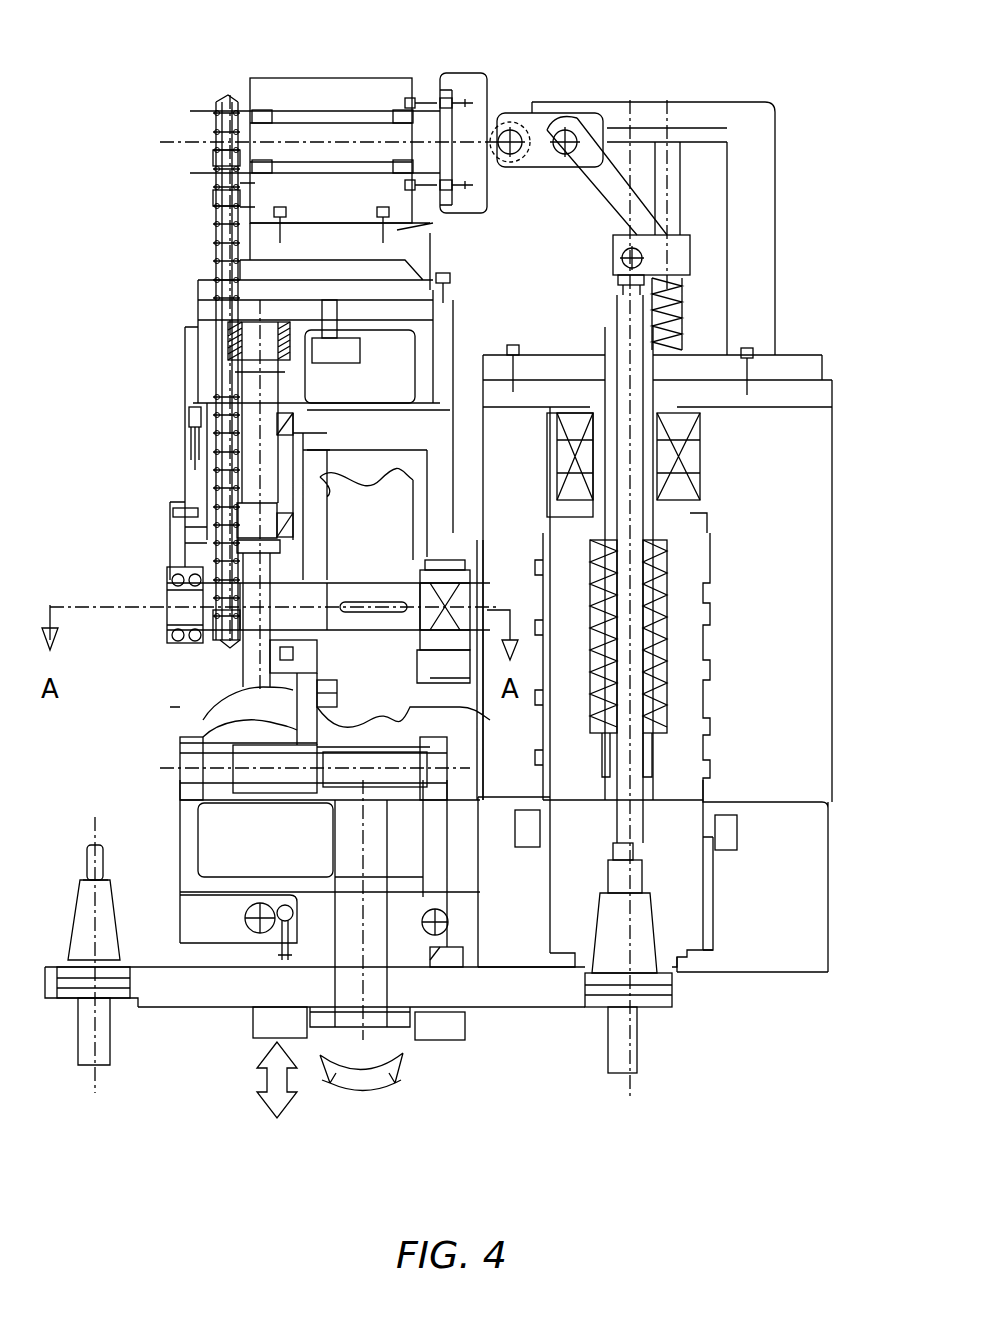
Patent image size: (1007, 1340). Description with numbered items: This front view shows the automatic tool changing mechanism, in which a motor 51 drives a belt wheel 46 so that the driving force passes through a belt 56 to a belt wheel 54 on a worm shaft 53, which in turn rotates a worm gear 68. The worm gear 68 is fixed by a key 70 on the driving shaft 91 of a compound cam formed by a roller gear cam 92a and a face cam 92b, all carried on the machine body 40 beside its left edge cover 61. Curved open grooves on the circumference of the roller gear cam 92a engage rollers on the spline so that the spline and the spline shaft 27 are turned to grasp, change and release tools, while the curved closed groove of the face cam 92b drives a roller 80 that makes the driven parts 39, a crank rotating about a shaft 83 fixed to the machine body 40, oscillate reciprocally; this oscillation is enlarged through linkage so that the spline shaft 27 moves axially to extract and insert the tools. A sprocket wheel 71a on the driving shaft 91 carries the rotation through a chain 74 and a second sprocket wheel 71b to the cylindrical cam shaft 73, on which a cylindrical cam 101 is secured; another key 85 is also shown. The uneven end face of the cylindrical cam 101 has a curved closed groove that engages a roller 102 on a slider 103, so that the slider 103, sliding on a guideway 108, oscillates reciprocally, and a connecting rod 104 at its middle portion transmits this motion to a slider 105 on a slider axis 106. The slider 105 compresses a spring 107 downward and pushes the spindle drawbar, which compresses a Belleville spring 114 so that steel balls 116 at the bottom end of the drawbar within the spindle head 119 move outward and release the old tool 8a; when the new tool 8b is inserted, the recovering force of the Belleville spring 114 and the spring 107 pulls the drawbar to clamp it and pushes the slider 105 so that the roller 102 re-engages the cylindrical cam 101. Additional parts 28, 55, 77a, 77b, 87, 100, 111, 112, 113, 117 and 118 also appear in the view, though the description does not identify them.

The old tool 8a is at (640, 1020).
The new tool 8b is at (95, 1010).
The spline shaft 27 is at (375, 995).
The base plate 28 is at (230, 1000).
The driven parts 39 is at (300, 735).
The machine body 40 is at (195, 868).
The belt wheel 46 is at (365, 345).
The motor 51 is at (265, 268).
The worm shaft 53 is at (248, 440).
The belt wheel 54 is at (240, 330).
The bolt 55 is at (190, 420).
The belt 56 is at (262, 370).
The left edge cover of the machine body 61 is at (197, 548).
The worm gear 68 is at (290, 655).
The key 70 is at (180, 590).
The sprocket wheel 71a is at (230, 632).
The sprocket wheel 71b is at (228, 100).
The cylindrical cam shaft 73 is at (232, 158).
The chain 74 is at (232, 196).
The fitting 77a is at (265, 950).
The fitting 77b is at (450, 955).
The driving roller 80 is at (317, 700).
The shaft 83 is at (230, 765).
The key 85 is at (465, 560).
The bearing housing 87 is at (470, 540).
The driving shaft 91 is at (470, 595).
The roller gear cam 92a is at (413, 480).
The face cam 92b is at (470, 715).
The bolt 100 is at (448, 92).
The cylindrical cam 101 is at (475, 95).
The roller 102 is at (515, 155).
The slider 103 is at (560, 120).
The connecting rod 104 is at (600, 210).
The slider 105 is at (680, 245).
The slider axis 106 is at (720, 108).
The spring 107 is at (690, 312).
The guideway 108 is at (665, 120).
The support plate 111 is at (755, 180).
The top plate 112 is at (760, 393).
The bearing 113 is at (668, 520).
The Belleville spring 114 is at (665, 690).
The steel ball 116 is at (705, 900).
The spindle head body 117 is at (760, 618).
The bearing 118 is at (700, 445).
The spindle head 119 is at (690, 282).